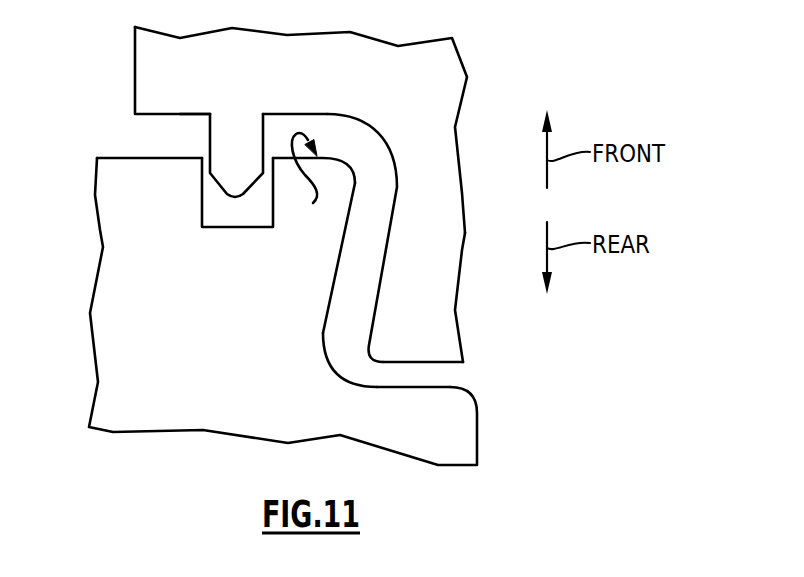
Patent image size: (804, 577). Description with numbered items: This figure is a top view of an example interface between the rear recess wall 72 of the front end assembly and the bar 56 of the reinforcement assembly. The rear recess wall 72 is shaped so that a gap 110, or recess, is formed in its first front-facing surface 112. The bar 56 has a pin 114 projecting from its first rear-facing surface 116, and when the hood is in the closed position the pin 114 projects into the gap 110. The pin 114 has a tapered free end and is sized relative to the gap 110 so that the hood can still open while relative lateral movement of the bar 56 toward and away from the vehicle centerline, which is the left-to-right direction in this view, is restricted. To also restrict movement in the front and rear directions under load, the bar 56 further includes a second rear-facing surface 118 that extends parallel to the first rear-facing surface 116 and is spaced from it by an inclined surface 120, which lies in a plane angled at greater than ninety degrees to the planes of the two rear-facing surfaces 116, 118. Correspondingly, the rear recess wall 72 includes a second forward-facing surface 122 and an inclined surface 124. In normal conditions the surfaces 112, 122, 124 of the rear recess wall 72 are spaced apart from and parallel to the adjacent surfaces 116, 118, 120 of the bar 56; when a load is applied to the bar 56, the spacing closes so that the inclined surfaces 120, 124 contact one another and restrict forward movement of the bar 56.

The bar 56 is at (413, 73).
The rear recess wall 72 is at (300, 176).
The gap 110 is at (217, 203).
The first front-facing surface 112 is at (123, 157).
The pin 114 is at (250, 145).
The first rear-facing surface 116 is at (193, 114).
The second rear-facing surface 118 is at (447, 362).
The inclined surface 120 is at (384, 237).
The second forward-facing surface 122 is at (401, 384).
The inclined surface 124 is at (338, 270).